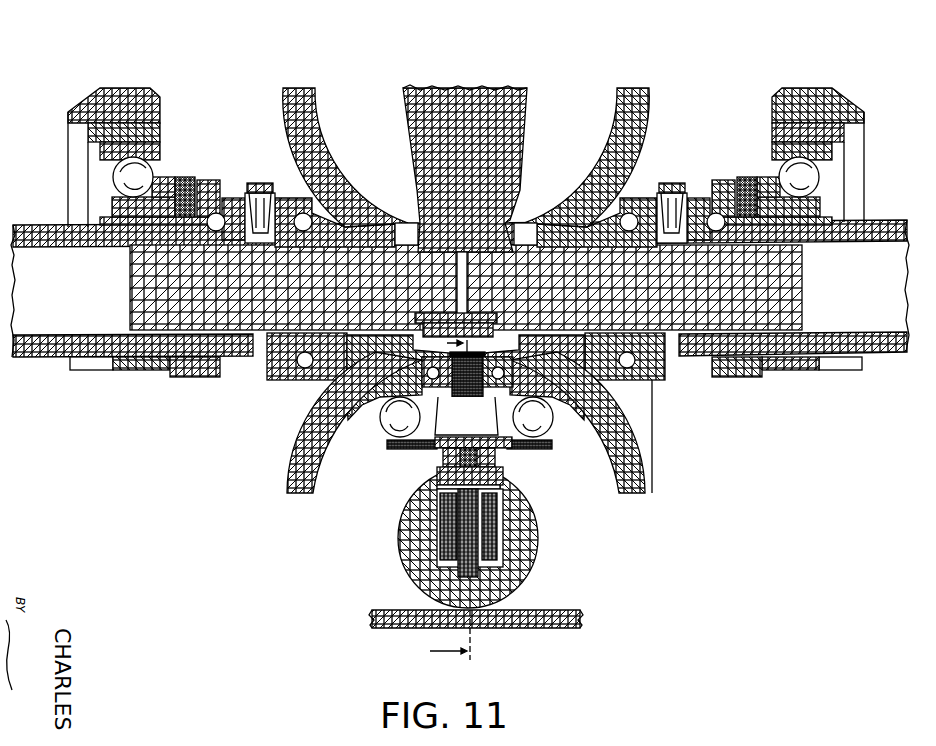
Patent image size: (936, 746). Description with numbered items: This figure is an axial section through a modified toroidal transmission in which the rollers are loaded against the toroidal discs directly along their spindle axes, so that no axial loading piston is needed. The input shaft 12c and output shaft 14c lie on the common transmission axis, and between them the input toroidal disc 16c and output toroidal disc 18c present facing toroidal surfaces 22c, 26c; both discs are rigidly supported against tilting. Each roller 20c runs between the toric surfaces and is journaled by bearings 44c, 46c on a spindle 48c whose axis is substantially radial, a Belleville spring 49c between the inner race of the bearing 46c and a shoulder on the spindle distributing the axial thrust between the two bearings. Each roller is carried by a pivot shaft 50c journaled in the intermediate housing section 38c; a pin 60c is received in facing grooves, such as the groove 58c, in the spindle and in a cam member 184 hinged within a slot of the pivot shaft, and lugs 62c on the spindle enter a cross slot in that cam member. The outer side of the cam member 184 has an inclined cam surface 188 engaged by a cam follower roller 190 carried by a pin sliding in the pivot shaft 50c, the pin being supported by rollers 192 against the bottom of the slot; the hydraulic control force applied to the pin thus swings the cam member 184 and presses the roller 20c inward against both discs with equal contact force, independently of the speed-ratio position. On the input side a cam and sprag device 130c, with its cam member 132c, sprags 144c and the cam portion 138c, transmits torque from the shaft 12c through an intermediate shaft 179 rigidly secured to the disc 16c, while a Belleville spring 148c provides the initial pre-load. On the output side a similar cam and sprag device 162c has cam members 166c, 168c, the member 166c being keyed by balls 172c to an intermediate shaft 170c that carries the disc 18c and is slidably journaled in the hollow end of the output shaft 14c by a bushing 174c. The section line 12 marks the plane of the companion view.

The input shaft 12c is at (44, 240).
The output shaft 14c is at (878, 223).
The input toroidal disc 16c is at (308, 112).
The output toroidal disc 18c is at (625, 105).
The roller 20c is at (583, 420).
The toroidal surface 22c is at (330, 167).
The toroidal surface 26c is at (607, 142).
The intermediate housing section 38c is at (465, 168).
The bearing 44c is at (395, 420).
The bearing 46c is at (508, 373).
The roller spindle 48c is at (472, 383).
The Belleville spring 49c is at (445, 392).
The pivot shaft 50c is at (527, 550).
The groove 58c is at (493, 458).
The pin 60c is at (474, 445).
The lugs 62c is at (437, 463).
The cam and sprag device 130c is at (272, 180).
The cam member 132c is at (231, 197).
The cam portion 138c is at (287, 237).
The sprags 144c is at (247, 197).
The Belleville washer spring 148c is at (178, 180).
The cam and sprag device 162c is at (666, 180).
The cam member 166c is at (647, 197).
The cam member 168c is at (698, 197).
The intermediate shaft 170c is at (634, 287).
The balls 172c is at (630, 232).
The bushing 174c is at (743, 247).
The intermediate input shaft 179 is at (298, 287).
The cam member 184 is at (500, 477).
The cam surface 188 is at (503, 487).
The cam follower roller 190 is at (458, 496).
The rollers 192 is at (447, 500).
The section line 12 is at (449, 507).